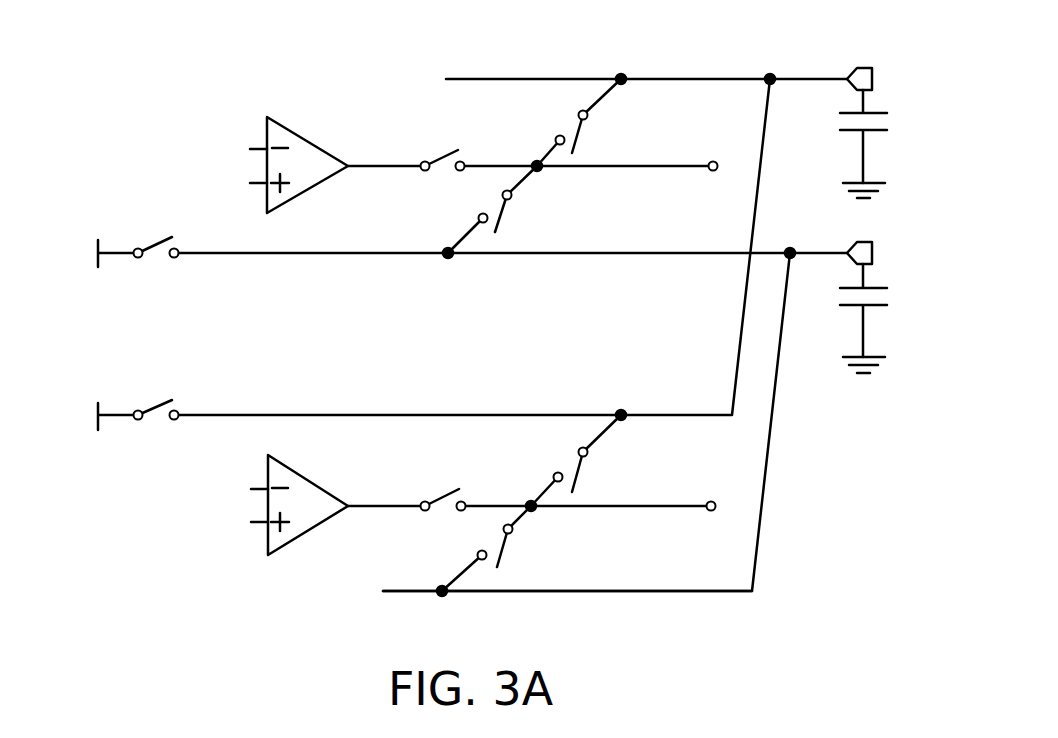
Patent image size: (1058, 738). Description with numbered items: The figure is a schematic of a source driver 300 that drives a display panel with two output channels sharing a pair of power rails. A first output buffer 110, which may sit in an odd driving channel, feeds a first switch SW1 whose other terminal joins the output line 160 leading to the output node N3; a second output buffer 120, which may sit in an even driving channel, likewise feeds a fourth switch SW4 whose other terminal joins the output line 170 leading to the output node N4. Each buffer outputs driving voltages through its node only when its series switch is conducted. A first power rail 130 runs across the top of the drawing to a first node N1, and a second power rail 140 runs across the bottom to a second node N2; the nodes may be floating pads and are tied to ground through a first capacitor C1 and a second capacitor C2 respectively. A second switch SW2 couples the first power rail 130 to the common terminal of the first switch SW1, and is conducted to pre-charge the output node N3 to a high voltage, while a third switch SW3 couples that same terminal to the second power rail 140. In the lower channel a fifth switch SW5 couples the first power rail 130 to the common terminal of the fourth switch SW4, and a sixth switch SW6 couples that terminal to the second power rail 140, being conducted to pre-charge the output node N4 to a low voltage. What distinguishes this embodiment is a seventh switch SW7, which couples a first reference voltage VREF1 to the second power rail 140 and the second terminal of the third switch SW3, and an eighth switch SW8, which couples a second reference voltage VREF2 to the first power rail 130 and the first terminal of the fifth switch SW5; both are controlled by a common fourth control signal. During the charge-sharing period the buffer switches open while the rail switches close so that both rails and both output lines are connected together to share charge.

The first output buffer 110 is at (307, 140).
The second output buffer 120 is at (298, 472).
The first power rail 130 is at (495, 79).
The second power rail 140 is at (622, 591).
The output line 160 is at (603, 167).
The output line 170 is at (603, 507).
The source driver 300 is at (802, 587).
The first switch SW1 is at (406, 142).
The second switch SW2 is at (575, 122).
The third switch SW3 is at (504, 209).
The fourth switch SW4 is at (407, 483).
The fifth switch SW5 is at (567, 460).
The sixth switch SW6 is at (499, 548).
The seventh switch SW7 is at (157, 230).
The eighth switch SW8 is at (157, 393).
The first node N1 is at (863, 68).
The second node N2 is at (863, 243).
The output node N3 is at (715, 160).
The output node N4 is at (711, 500).
The first capacitor C1 is at (882, 144).
The second capacitor C2 is at (882, 318).
The first reference voltage VREF1 is at (56, 252).
The second reference voltage VREF2 is at (56, 415).